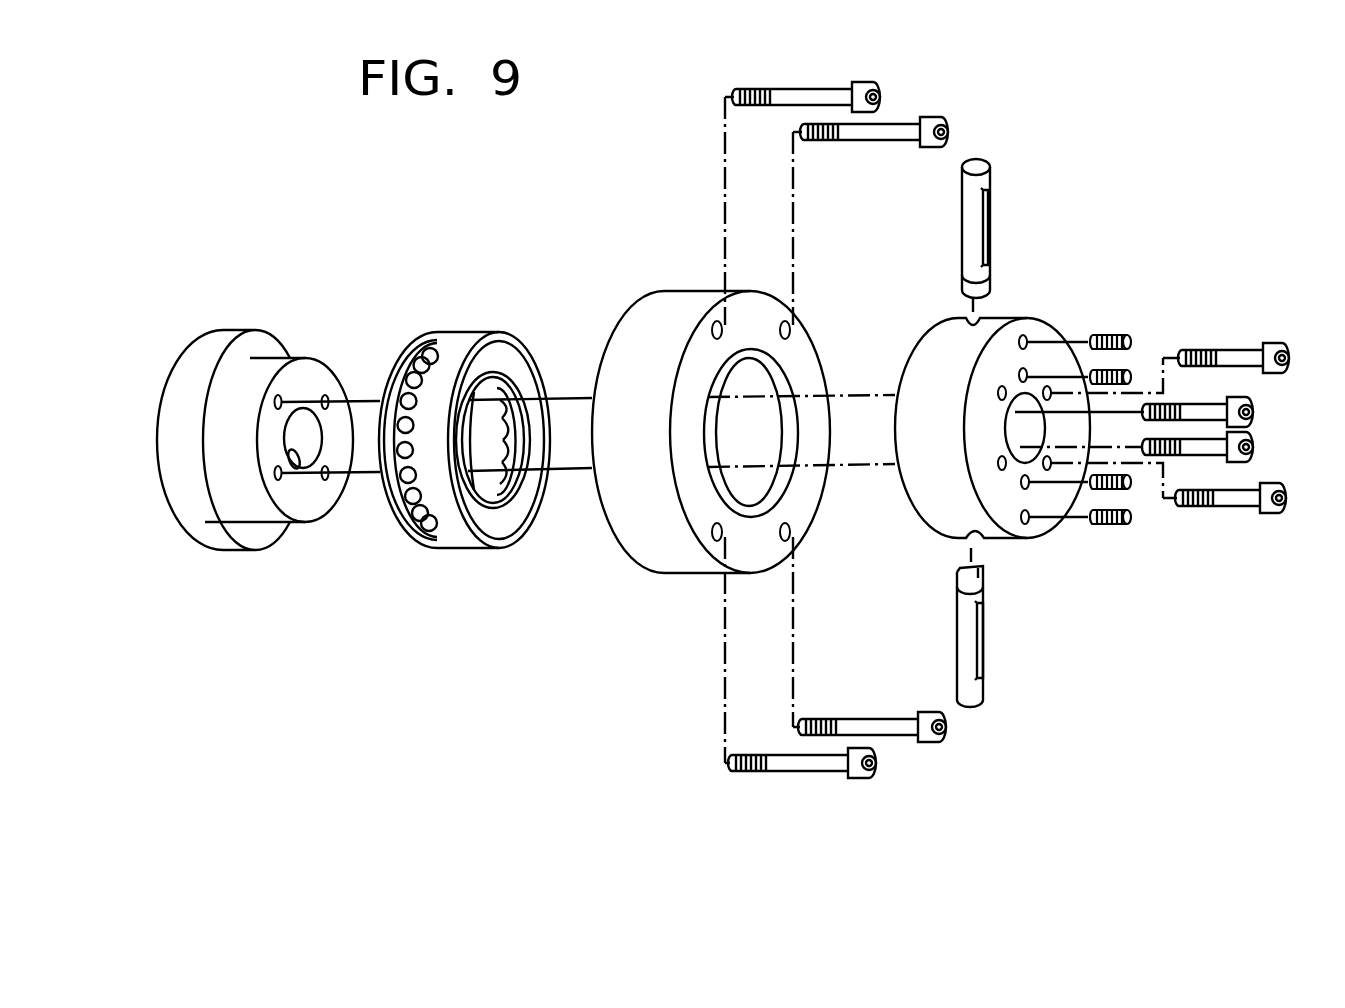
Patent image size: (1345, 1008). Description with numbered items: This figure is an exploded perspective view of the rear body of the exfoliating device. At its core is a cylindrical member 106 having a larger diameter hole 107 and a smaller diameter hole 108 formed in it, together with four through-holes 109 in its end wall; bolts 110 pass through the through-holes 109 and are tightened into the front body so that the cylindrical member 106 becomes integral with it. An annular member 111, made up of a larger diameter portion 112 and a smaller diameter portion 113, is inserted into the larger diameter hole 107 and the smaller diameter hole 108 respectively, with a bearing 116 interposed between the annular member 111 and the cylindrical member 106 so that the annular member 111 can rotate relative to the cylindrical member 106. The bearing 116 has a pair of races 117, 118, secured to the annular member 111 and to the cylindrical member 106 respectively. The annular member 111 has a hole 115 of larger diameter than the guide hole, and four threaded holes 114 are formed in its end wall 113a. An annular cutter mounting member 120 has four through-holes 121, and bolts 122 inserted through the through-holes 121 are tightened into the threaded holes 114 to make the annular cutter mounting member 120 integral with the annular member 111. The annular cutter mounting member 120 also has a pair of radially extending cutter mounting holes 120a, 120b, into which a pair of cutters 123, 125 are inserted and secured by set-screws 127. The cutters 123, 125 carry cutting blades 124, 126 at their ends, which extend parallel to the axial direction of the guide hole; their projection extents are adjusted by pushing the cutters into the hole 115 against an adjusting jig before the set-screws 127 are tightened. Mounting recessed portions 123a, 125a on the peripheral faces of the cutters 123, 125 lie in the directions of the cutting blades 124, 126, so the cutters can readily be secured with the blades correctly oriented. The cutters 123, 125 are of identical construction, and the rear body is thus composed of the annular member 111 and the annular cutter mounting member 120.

The cylindrical member 106 is at (736, 430).
The larger diameter hole 107 is at (748, 378).
The smaller diameter hole 108 is at (780, 373).
The through-holes 109 is at (716, 325).
The bolts 110 is at (856, 80).
The annular member 111 is at (257, 450).
The larger diameter portion 112 is at (183, 355).
The smaller diameter portion 113 is at (296, 429).
The end wall 113a is at (322, 518).
The threaded holes 114 is at (277, 478).
The hole 115 is at (298, 470).
The bearing 116 is at (459, 381).
The race 117 is at (405, 342).
The race 118 is at (470, 332).
The annular cutter mounting member 120 is at (983, 416).
The cutter mounting hole 120a is at (982, 318).
The cutter mounting hole 120b is at (985, 545).
The through-holes 121 is at (998, 468).
The bolts 122 is at (1248, 358).
The cutter 123 is at (995, 209).
The mounting recessed portion 123a is at (990, 205).
The cutting blade 124 is at (962, 285).
The cutter 125 is at (995, 638).
The mounting recessed portion 125a is at (985, 632).
The cutting blade 126 is at (958, 580).
The set-screws 127 is at (1128, 340).